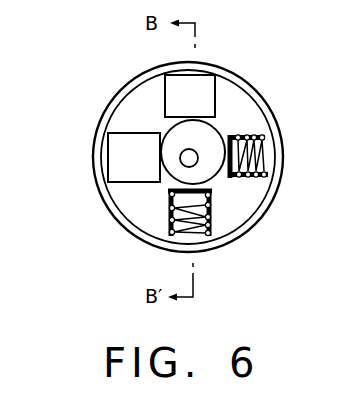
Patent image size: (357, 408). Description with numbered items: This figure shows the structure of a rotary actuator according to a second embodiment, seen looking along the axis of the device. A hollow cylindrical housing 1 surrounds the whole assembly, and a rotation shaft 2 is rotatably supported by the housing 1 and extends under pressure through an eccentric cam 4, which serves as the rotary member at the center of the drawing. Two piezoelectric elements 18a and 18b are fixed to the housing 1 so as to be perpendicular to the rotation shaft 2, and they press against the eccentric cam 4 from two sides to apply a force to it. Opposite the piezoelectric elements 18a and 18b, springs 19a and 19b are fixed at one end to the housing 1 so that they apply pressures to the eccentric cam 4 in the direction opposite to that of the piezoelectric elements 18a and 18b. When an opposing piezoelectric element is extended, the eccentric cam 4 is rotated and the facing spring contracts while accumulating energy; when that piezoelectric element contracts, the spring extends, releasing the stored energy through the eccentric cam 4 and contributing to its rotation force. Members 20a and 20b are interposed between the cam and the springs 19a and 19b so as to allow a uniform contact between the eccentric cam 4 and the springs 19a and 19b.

The housing 1 is at (282, 186).
The rotation shaft 2 is at (180, 158).
The eccentric cam 4 is at (178, 133).
The piezoelectric element 18a is at (118, 155).
The piezoelectric element 18b is at (198, 87).
The spring 19a is at (251, 133).
The spring 19b is at (167, 232).
The member 20a is at (230, 132).
The member 20b is at (165, 190).